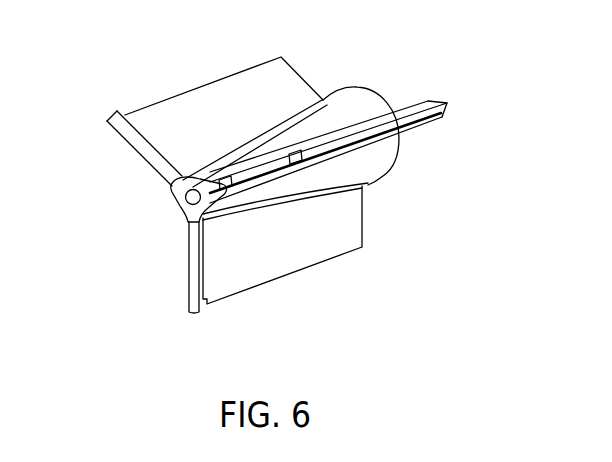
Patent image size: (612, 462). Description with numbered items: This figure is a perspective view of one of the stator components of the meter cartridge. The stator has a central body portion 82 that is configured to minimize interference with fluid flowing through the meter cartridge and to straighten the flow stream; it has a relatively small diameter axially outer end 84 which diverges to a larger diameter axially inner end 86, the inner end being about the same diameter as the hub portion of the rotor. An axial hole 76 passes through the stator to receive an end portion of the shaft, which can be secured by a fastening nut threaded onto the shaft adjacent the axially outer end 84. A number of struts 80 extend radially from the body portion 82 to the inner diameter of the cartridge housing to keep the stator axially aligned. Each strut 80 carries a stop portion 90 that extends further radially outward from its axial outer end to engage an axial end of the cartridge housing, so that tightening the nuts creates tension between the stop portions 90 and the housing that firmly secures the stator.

The axial hole 76 is at (381, 58).
The struts 80 is at (207, 91).
The central body portion 82 is at (366, 170).
The axially outer end 84 is at (184, 218).
The axially inner end 86 is at (400, 148).
The stop portion 90 is at (116, 108).